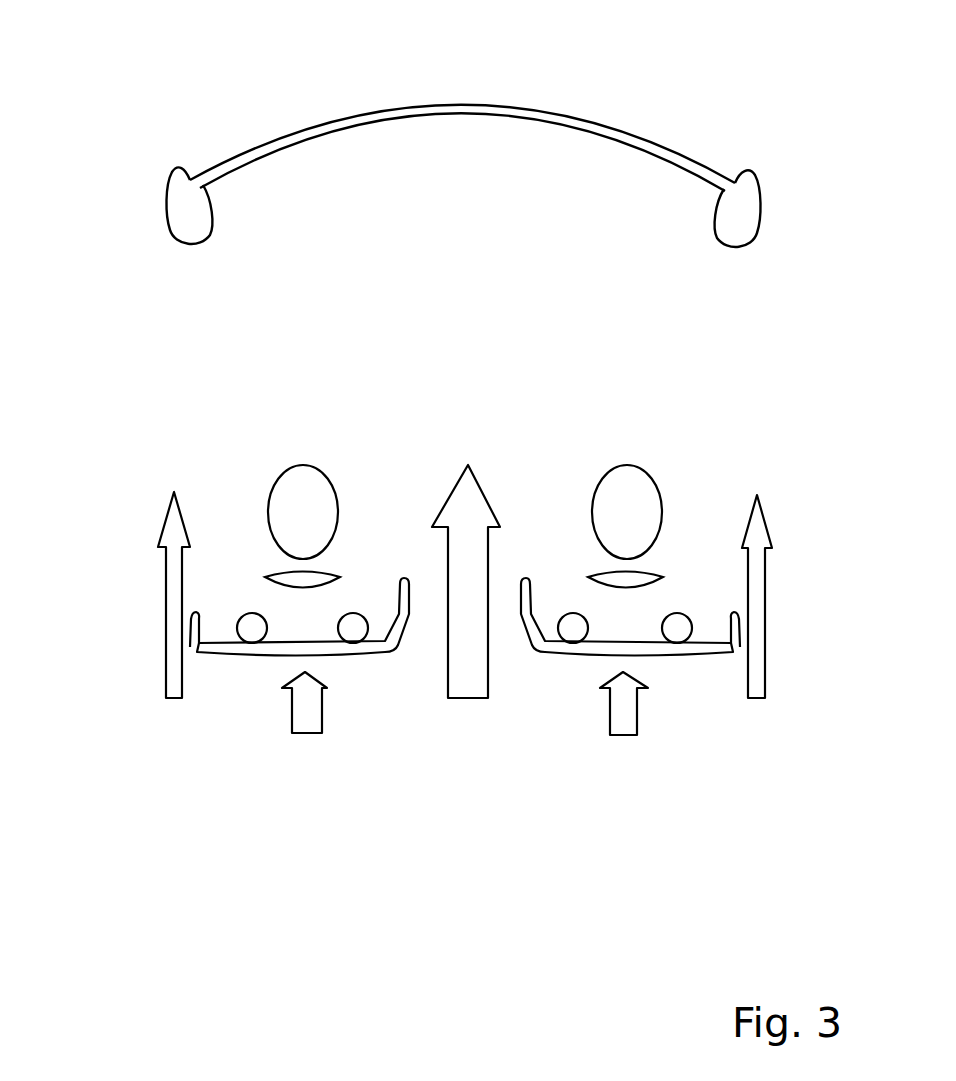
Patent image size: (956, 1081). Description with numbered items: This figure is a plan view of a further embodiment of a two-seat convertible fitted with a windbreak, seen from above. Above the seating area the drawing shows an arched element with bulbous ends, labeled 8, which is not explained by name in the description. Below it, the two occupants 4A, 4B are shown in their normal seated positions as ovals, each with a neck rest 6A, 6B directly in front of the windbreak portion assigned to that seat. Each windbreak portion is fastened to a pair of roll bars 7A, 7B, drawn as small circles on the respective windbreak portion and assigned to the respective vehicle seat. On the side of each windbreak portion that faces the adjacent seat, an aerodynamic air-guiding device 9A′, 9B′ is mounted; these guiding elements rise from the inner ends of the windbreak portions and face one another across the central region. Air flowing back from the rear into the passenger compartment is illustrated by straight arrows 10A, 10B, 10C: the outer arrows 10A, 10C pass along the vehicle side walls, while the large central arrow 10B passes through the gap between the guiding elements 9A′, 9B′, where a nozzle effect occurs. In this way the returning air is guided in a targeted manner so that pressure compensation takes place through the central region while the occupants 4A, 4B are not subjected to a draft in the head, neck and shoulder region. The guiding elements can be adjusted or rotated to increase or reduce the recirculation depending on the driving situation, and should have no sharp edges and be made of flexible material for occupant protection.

The sealing strap / cover 8 is at (573, 118).
The occupant 4A is at (300, 512).
The occupant 4B is at (612, 515).
The neck rest 6A is at (282, 577).
The neck rest 6B is at (640, 580).
The roll bar 7A is at (250, 633).
The roll bar 7B is at (572, 633).
The aerodynamic air-guiding device 9A′ is at (403, 597).
The aerodynamic air-guiding device 9B′ is at (523, 600).
The straight arrow 10A is at (175, 639).
The straight arrow 10B is at (462, 512).
The straight arrow 10C is at (755, 665).